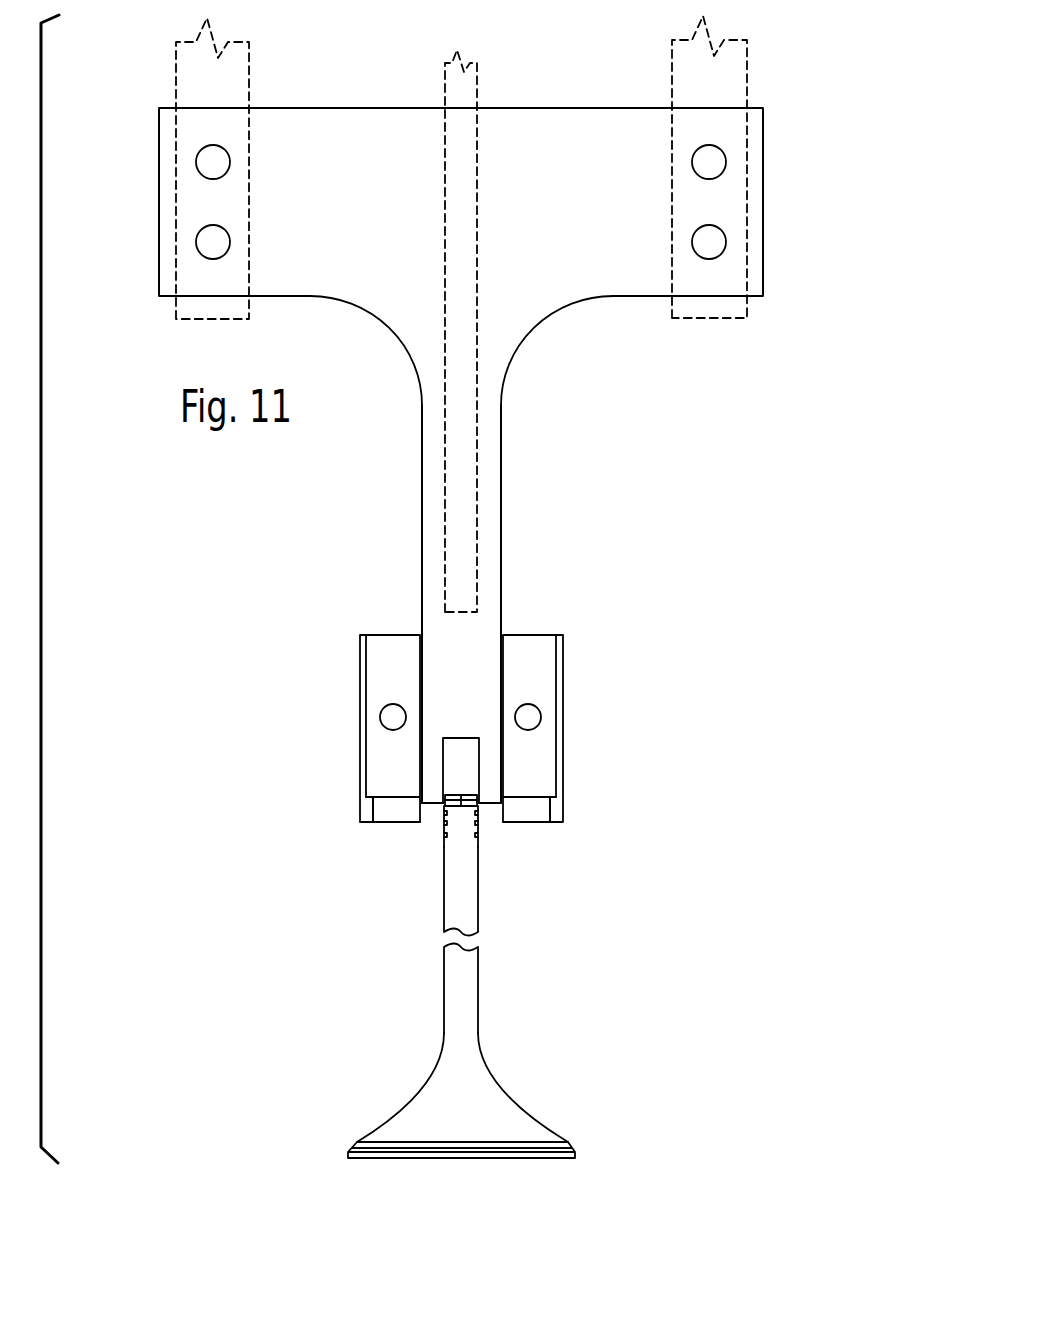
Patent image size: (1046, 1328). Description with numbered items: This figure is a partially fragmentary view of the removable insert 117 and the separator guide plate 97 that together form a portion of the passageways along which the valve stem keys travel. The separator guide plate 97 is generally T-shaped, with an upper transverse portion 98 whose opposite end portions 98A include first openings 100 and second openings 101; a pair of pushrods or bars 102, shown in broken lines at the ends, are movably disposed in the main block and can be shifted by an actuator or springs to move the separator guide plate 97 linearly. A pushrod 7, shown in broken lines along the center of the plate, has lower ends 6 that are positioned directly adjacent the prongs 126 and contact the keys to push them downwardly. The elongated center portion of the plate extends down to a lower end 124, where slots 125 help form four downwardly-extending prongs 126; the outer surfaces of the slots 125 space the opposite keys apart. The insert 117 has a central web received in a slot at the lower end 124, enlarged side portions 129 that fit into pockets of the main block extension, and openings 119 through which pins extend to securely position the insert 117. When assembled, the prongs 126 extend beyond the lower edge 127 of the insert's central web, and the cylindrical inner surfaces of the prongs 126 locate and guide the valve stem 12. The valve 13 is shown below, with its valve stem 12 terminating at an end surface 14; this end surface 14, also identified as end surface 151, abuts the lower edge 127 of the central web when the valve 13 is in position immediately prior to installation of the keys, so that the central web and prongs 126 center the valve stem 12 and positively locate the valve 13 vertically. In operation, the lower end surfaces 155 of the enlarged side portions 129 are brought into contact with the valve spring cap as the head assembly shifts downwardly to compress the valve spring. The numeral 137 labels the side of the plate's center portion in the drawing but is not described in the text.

The lower end of pushrod 6 is at (478, 480).
The pushrod 7 is at (478, 90).
The valve stem 12 is at (467, 903).
The valve 13 is at (479, 982).
The end surface of valve stem 14 is at (481, 806).
The separator guide plate 97 is at (501, 518).
The upper transverse portion 98 is at (632, 148).
The opposite end portions 98A is at (159, 220).
The first openings 100 is at (190, 232).
The second openings 101 is at (197, 155).
The pushrods or bars 102 is at (170, 66).
The insert 117 is at (562, 692).
The openings in insert 119 is at (393, 717).
The lower end of center portion 124 is at (495, 615).
The slots 125 is at (462, 773).
The prongs 126 is at (444, 806).
The lower edge of central web 127 is at (450, 845).
The enlarged side portions 129 is at (365, 813).
The stem side 137 is at (430, 549).
The end surface of valve stem 151 is at (478, 795).
The lower end surfaces 155 is at (387, 823).